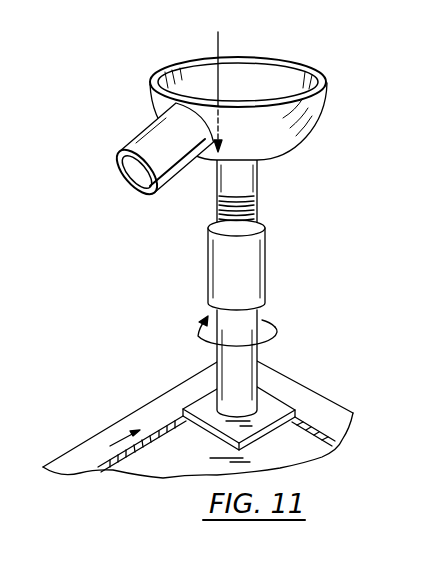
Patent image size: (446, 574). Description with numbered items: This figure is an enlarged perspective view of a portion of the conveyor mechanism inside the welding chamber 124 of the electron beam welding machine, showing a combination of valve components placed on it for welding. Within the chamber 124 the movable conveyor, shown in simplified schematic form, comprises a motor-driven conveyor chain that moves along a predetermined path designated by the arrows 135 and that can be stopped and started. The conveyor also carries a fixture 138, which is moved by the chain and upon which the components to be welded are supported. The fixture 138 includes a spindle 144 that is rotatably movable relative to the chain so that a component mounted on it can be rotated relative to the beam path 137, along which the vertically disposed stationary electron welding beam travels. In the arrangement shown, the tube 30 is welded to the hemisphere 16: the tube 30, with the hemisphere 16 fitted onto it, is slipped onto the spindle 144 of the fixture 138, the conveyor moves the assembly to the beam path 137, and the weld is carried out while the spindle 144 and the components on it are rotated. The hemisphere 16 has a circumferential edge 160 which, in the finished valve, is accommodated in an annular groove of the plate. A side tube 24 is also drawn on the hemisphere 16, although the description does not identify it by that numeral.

The beam path 137 is at (220, 35).
The circumferential edge 160 is at (303, 62).
The hemisphere 16 is at (292, 128).
The side inlet tube 24 is at (146, 137).
The tube 30 is at (250, 180).
The welding chamber 124 is at (332, 254).
The spindle 144 is at (251, 368).
The fixture 138 is at (282, 393).
The arrows 135 is at (312, 430).